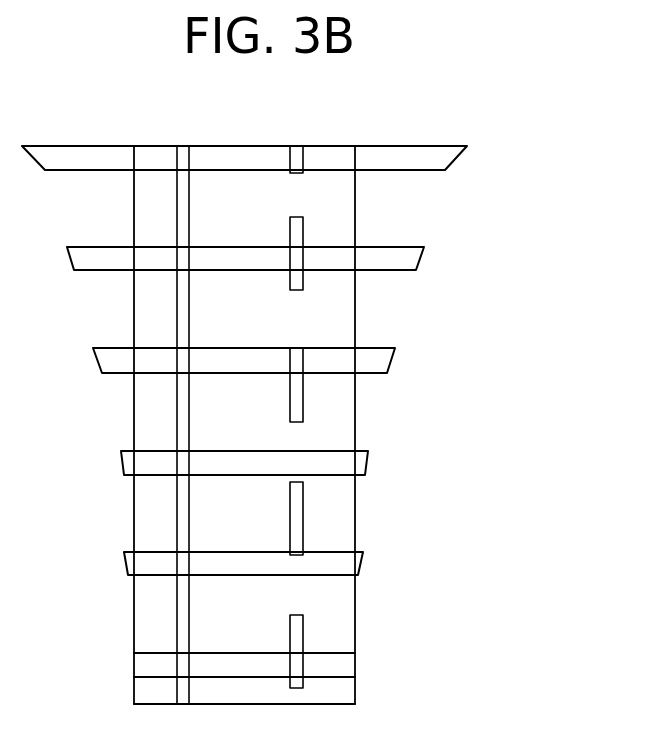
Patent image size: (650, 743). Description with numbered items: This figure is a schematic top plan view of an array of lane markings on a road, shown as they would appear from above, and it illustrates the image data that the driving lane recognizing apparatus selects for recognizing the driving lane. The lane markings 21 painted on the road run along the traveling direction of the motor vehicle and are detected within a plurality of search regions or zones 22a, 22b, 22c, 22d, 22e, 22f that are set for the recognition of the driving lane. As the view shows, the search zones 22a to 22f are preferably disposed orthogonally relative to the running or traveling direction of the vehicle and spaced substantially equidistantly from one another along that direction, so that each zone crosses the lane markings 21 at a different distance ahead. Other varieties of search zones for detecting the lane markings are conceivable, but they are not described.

The lane markings 21 is at (289, 291).
The search zone 22a is at (430, 170).
The search zone 22b is at (416, 270).
The search zone 22c is at (390, 365).
The search zone 22d is at (366, 465).
The search zone 22e is at (362, 565).
The search zone 22f is at (355, 665).